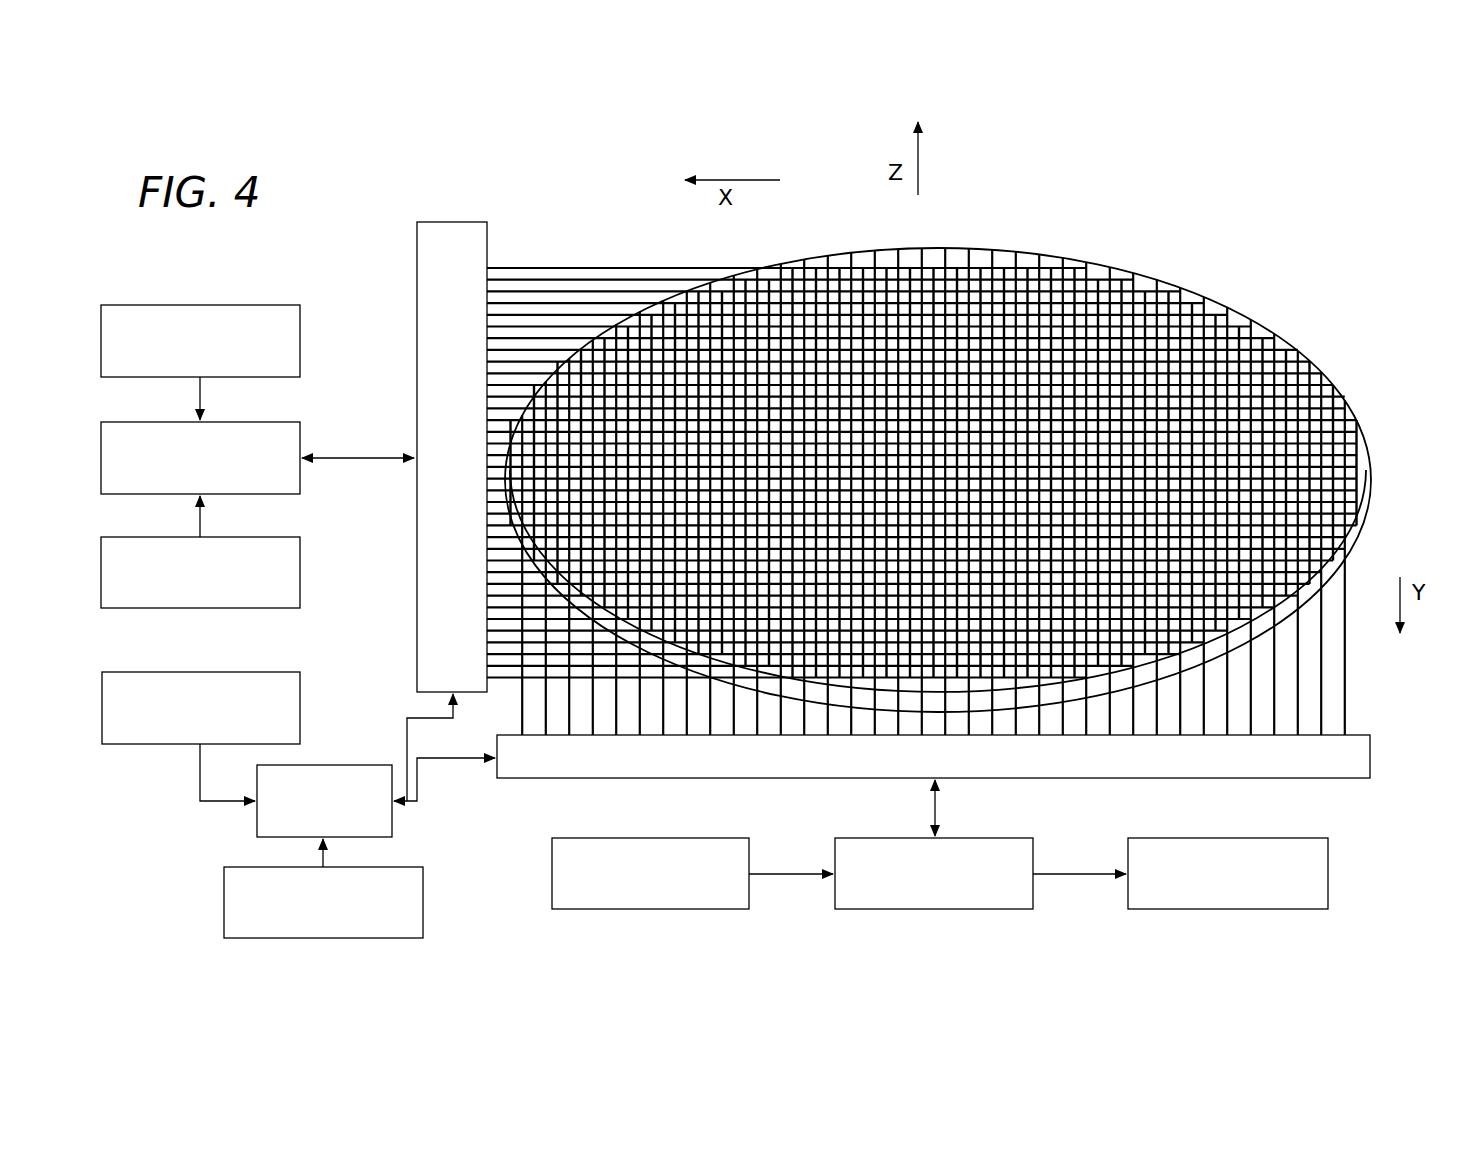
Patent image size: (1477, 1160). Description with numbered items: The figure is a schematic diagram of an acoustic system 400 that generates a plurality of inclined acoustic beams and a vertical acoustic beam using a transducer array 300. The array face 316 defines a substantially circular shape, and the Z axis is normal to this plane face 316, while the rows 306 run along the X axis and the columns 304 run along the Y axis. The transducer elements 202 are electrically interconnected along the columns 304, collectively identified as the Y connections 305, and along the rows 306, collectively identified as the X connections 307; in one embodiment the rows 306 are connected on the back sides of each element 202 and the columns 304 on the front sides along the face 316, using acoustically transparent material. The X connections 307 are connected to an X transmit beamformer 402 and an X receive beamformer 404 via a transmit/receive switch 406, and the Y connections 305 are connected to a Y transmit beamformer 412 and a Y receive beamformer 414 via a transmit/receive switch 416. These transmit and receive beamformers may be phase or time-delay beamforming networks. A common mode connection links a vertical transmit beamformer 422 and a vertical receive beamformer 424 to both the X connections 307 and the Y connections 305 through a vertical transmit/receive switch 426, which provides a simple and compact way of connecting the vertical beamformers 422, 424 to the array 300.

The acoustic system 400 is at (1038, 180).
The transducer array 300 is at (910, 250).
The array face 316 is at (1083, 246).
The transducer elements 202 is at (1212, 300).
The rows 306 is at (705, 265).
The columns 304 is at (1347, 705).
The X connections 307 is at (450, 222).
The Y connections 305 is at (1333, 778).
The X transmit beamformer 402 is at (300, 338).
The transmit/receive switch 406 is at (300, 443).
The X receive beamformer 404 is at (300, 571).
The vertical transmit beamformer 422 is at (217, 672).
The vertical transmit/receive switch 426 is at (392, 836).
The vertical receive beamformer 424 is at (245, 867).
The Y transmit beamformer 412 is at (650, 838).
The transmit/receive switch 416 is at (963, 838).
The Y receive beamformer 414 is at (1230, 838).